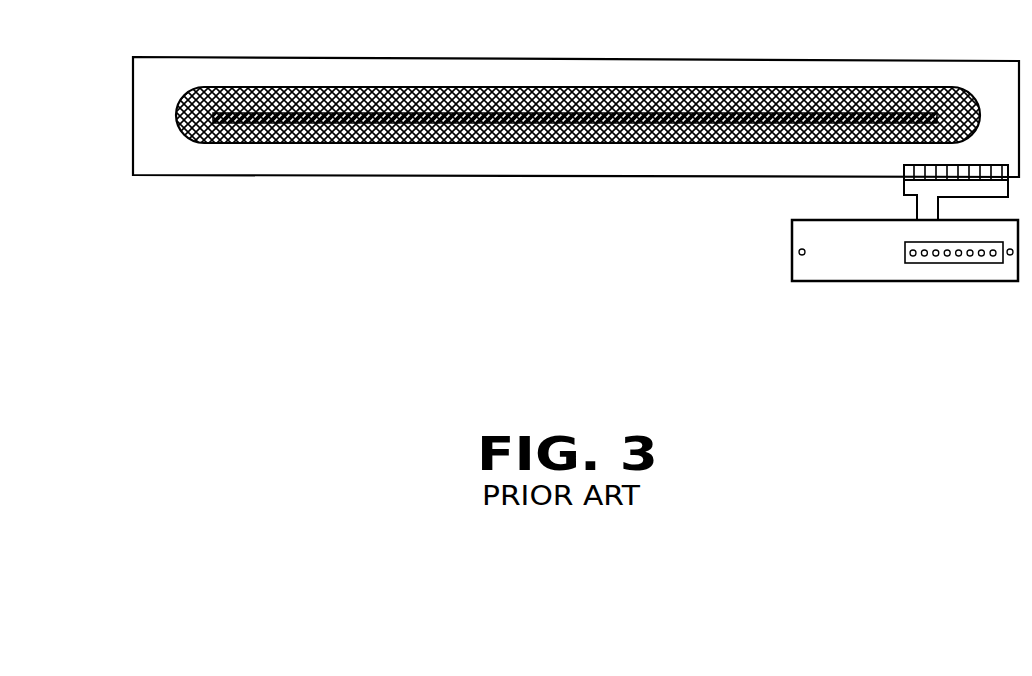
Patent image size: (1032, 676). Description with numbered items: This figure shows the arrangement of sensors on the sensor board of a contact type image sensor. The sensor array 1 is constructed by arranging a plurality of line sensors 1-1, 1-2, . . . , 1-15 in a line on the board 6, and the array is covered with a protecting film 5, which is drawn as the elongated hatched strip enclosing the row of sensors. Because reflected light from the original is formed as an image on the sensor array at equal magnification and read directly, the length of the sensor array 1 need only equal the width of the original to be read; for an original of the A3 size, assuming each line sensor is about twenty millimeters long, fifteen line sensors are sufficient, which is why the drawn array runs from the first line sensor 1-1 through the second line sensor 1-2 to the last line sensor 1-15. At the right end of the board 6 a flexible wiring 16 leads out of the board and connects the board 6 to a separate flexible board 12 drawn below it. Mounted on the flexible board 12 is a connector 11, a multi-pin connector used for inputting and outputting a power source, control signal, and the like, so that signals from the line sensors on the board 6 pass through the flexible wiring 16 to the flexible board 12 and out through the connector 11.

The sensor array 1 is at (347, 123).
The line sensor 1-1 is at (575, 118).
The line sensor 1-2 is at (575, 118).
The line sensor 1-15 is at (575, 118).
The protecting film 5 is at (458, 145).
The board 6 is at (530, 177).
The connector 11 is at (962, 263).
The flexible board 12 is at (862, 268).
The flexible wiring 16 is at (917, 191).